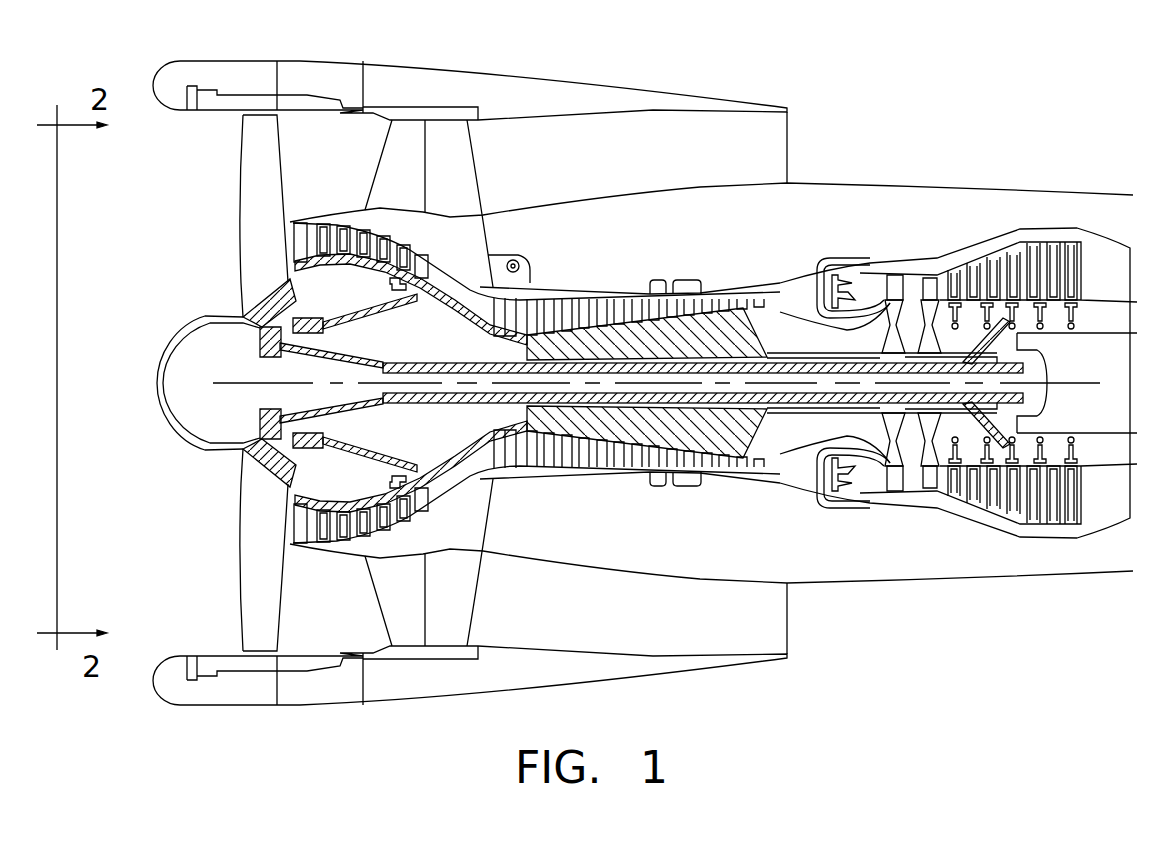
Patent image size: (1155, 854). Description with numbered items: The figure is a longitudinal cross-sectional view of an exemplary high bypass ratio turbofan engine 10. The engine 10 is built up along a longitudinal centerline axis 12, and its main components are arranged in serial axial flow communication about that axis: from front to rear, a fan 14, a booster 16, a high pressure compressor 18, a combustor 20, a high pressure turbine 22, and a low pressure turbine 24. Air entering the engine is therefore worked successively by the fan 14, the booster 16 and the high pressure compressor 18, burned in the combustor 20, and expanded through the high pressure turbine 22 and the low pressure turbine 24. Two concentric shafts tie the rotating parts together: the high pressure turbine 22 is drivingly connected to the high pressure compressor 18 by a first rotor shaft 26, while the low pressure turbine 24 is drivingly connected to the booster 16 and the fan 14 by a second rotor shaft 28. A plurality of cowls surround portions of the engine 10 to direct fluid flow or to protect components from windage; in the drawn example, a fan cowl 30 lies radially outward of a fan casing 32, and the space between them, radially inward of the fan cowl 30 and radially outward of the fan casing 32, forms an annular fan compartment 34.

The high bypass ratio turbofan engine 10 is at (803, 502).
The longitudinal centerline axis 12 is at (343, 382).
The fan 14 is at (227, 240).
The booster 16 is at (418, 233).
The high pressure compressor 18 is at (650, 273).
The combustor 20 is at (877, 246).
The high pressure turbine 22 is at (917, 255).
The low pressure turbine 24 is at (998, 229).
The first rotor shaft 26 is at (768, 337).
The second rotor shaft 28 is at (453, 362).
The fan cowl 30 is at (341, 63).
The fan casing 32 is at (493, 120).
The annular fan compartment 34 is at (304, 72).